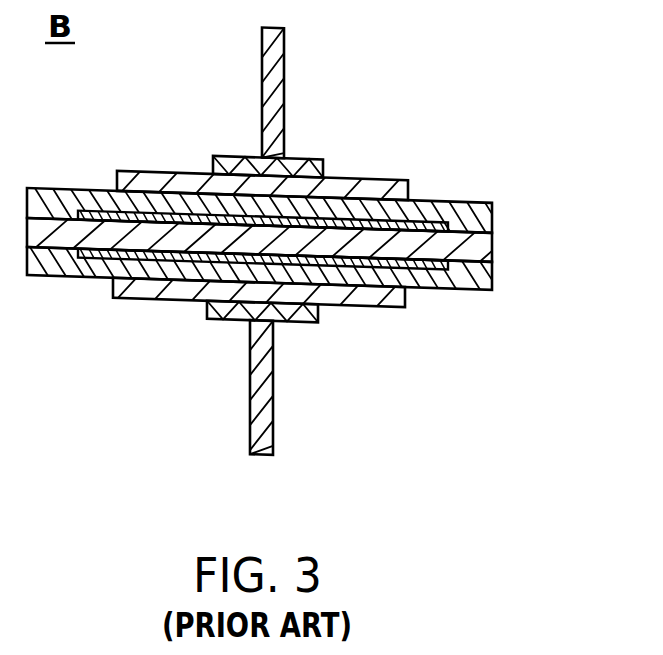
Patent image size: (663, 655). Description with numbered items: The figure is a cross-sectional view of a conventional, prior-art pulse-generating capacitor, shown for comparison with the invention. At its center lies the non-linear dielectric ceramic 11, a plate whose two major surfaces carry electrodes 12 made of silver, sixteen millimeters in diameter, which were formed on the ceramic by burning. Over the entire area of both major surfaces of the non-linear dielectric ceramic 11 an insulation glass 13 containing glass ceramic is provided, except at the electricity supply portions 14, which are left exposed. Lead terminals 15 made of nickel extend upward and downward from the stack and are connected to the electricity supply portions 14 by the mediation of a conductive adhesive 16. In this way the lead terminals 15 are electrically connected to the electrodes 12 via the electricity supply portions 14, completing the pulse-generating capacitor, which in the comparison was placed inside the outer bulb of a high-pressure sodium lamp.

The non-linear dielectric ceramic 11 is at (478, 248).
The electrodes 12 is at (395, 205).
The insulation glass 13 is at (73, 190).
The electricity supply portions 14 is at (157, 200).
The lead terminals 15 is at (273, 87).
The conductive adhesive 16 is at (307, 156).